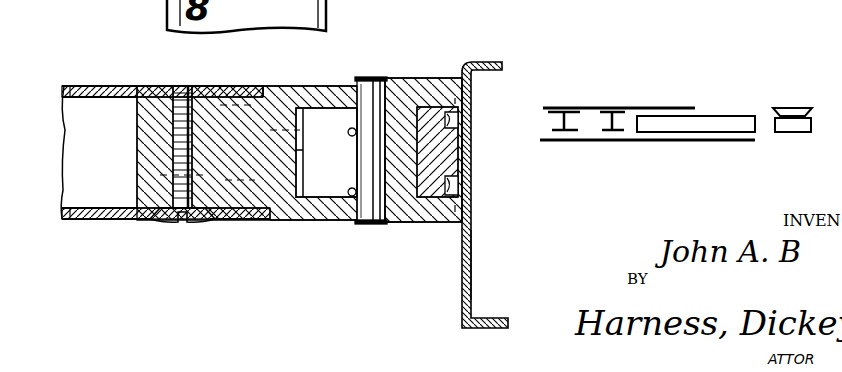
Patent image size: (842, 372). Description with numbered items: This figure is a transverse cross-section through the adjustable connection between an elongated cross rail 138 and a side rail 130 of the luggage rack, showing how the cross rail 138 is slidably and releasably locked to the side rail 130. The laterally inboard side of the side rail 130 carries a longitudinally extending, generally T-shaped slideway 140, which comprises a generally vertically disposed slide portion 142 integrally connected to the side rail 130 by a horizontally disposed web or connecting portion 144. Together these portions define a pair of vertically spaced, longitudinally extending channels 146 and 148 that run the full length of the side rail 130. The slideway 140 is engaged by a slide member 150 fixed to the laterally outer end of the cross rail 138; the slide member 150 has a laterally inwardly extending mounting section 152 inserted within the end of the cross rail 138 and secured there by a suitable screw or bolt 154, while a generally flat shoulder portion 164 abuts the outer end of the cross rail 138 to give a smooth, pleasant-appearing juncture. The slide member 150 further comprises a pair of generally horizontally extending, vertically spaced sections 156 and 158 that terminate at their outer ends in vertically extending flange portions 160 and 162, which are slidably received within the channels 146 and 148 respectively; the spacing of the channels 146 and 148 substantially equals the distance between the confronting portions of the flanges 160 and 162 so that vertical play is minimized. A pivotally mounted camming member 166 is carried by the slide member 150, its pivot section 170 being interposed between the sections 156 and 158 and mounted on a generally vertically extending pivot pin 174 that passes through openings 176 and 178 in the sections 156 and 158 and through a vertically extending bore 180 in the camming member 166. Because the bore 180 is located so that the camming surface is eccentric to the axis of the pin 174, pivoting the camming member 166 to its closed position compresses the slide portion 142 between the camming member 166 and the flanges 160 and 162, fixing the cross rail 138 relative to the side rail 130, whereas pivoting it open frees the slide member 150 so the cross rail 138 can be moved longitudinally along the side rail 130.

The side rail 130 is at (498, 58).
The cross rail 138 is at (82, 228).
The slideway 140 is at (472, 232).
The slide portion 142 is at (422, 108).
The connecting portion 144 is at (456, 160).
The channel 146 is at (457, 122).
The channel 148 is at (457, 184).
The slide member 150 is at (313, 222).
The mounting section 152 is at (238, 205).
The screw 154 is at (172, 222).
The upper section 156 is at (362, 78).
The lower section 158 is at (402, 224).
The flange portion 160 is at (462, 102).
The flange portion 162 is at (462, 208).
The shoulder portion 164 is at (264, 95).
The camming member 166 is at (390, 224).
The pivot section 170 is at (298, 150).
The pivot pin 174 is at (372, 226).
The opening 176 is at (377, 80).
The opening 178 is at (356, 190).
The bore 180 is at (355, 130).